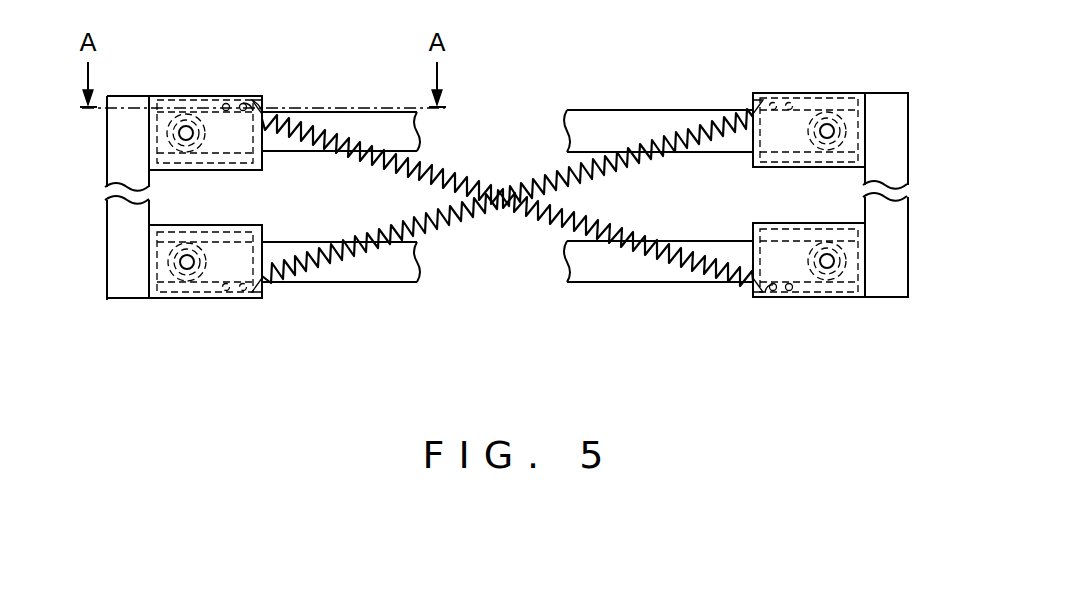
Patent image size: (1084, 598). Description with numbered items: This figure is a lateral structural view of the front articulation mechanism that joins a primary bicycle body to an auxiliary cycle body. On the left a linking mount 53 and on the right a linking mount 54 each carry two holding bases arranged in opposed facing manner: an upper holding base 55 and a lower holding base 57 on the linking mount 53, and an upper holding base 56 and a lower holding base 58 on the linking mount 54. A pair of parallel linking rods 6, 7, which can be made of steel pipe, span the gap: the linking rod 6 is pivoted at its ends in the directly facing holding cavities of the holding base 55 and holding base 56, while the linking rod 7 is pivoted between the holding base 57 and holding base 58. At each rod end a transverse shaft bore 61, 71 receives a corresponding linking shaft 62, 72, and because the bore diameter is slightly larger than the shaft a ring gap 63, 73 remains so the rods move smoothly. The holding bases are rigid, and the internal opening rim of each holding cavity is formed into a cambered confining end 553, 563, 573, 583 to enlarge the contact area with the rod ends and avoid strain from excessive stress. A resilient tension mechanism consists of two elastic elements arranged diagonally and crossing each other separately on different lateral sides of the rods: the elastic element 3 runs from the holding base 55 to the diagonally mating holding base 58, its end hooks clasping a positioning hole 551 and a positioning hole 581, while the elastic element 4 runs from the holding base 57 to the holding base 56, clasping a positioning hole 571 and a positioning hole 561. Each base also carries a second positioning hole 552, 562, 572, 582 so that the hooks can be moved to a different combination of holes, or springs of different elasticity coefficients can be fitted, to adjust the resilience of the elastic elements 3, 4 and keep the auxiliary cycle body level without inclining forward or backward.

The elastic element 3 is at (448, 166).
The elastic element 4 is at (436, 235).
The linking rod 6 is at (587, 123).
The linking rod 7 is at (581, 280).
The linking mount 53 is at (113, 300).
The linking mount 54 is at (890, 297).
The holding base 55 is at (175, 96).
The holding base 56 is at (843, 93).
The holding base 57 is at (168, 298).
The holding base 58 is at (848, 297).
The shaft bore 61 is at (811, 128).
The linking shaft 62 is at (822, 146).
The ring gap 63 is at (840, 138).
The shaft bore 71 is at (201, 264).
The linking shaft 72 is at (186, 253).
The ring gap 73 is at (197, 243).
The positioning hole 551 is at (243, 103).
The positioning hole 552 is at (226, 103).
The cambered confining end 553 is at (263, 108).
The positioning hole 561 is at (773, 102).
The positioning hole 562 is at (789, 102).
The cambered confining end 563 is at (755, 108).
The positioning hole 571 is at (243, 292).
The positioning hole 572 is at (226, 292).
The cambered confining end 573 is at (262, 288).
The positioning hole 581 is at (774, 292).
The positioning hole 582 is at (789, 291).
The cambered confining end 583 is at (757, 230).